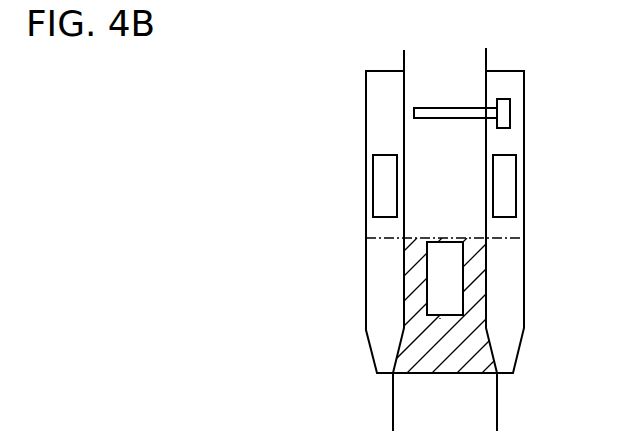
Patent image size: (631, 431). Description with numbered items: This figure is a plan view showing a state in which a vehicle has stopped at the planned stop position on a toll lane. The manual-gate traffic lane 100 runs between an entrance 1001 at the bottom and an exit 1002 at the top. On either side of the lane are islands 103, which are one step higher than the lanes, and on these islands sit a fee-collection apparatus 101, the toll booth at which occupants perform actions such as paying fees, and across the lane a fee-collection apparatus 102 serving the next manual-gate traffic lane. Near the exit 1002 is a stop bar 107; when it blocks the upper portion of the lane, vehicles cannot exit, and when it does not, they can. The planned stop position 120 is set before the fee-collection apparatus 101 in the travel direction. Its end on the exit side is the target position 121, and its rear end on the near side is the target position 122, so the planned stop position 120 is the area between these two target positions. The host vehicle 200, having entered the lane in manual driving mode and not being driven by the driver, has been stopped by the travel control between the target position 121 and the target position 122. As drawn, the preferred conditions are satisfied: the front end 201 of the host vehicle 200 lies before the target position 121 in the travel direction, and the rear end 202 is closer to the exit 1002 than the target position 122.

The manual-gate traffic lane 100 is at (393, 416).
The entrance to manual-gate traffic lane 1001 is at (467, 408).
The exit from manual-gate traffic lane 1002 is at (425, 60).
The island 103 is at (517, 143).
The target position 121 is at (380, 243).
The planned stop position 120 is at (492, 343).
The target position 122 is at (411, 380).
The fee-collection apparatus 102 is at (380, 188).
The fee-collection apparatus 101 is at (507, 187).
The stop bar 107 is at (430, 120).
The front end of host vehicle 201 is at (443, 238).
The host vehicle 200 is at (455, 280).
The rear end of host vehicle 202 is at (437, 318).